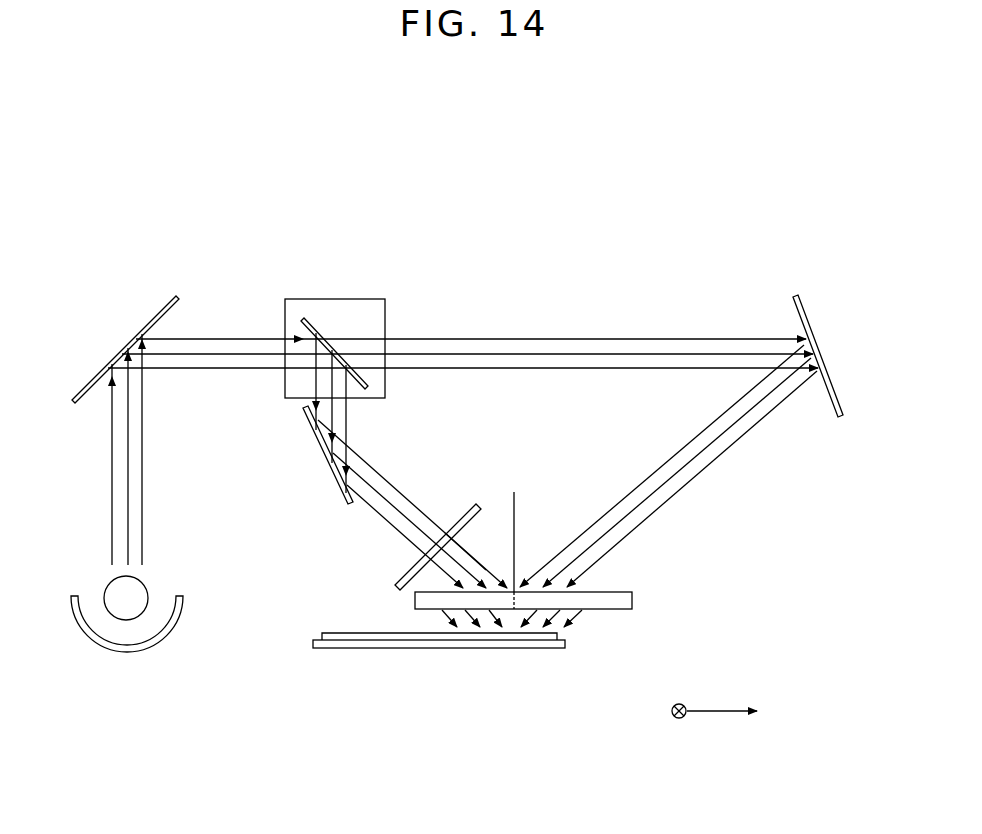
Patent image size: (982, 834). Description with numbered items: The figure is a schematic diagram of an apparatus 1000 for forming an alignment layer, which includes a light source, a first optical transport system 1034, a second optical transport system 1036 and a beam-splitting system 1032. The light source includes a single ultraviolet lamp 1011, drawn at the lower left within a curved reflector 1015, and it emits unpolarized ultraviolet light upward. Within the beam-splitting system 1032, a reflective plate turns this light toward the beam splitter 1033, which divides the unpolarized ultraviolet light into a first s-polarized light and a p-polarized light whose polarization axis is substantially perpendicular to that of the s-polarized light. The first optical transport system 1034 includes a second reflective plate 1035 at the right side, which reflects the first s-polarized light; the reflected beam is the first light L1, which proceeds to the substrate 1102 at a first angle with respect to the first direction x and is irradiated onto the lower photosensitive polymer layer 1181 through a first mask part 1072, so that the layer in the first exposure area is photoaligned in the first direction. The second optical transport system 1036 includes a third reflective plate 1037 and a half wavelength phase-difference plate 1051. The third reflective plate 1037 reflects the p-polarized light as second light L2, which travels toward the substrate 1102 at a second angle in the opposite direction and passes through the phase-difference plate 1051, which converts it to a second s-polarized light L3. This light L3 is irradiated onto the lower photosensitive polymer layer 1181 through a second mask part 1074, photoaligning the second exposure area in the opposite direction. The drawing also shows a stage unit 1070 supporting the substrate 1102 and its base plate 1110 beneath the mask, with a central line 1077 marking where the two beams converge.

The apparatus for forming an alignment layer 1000 is at (425, 190).
The ultraviolet lamp 1011 is at (122, 610).
The reflector 1015 is at (155, 642).
The beam-splitting system 1032 is at (362, 237).
The beam splitter 1033 is at (141, 333).
The first optical transport system 1034 is at (773, 315).
The second reflective plate 1035 is at (823, 352).
The second optical transport system 1036 is at (242, 442).
The third reflective plate 1037 is at (334, 466).
The ½ wavelength phase-difference plate 1051 is at (396, 580).
The stage unit 1070 is at (618, 720).
The first mask part 1072 is at (592, 603).
The second mask part 1074 is at (433, 603).
The optical axis line 1077 is at (507, 508).
The substrate 1102 is at (398, 720).
The substrate 1110 is at (373, 644).
The lower photosensitive polymer layer 1181 is at (338, 637).
The first light L1 is at (713, 462).
The second light L2 is at (390, 527).
The second s-polarized light L3 is at (462, 543).